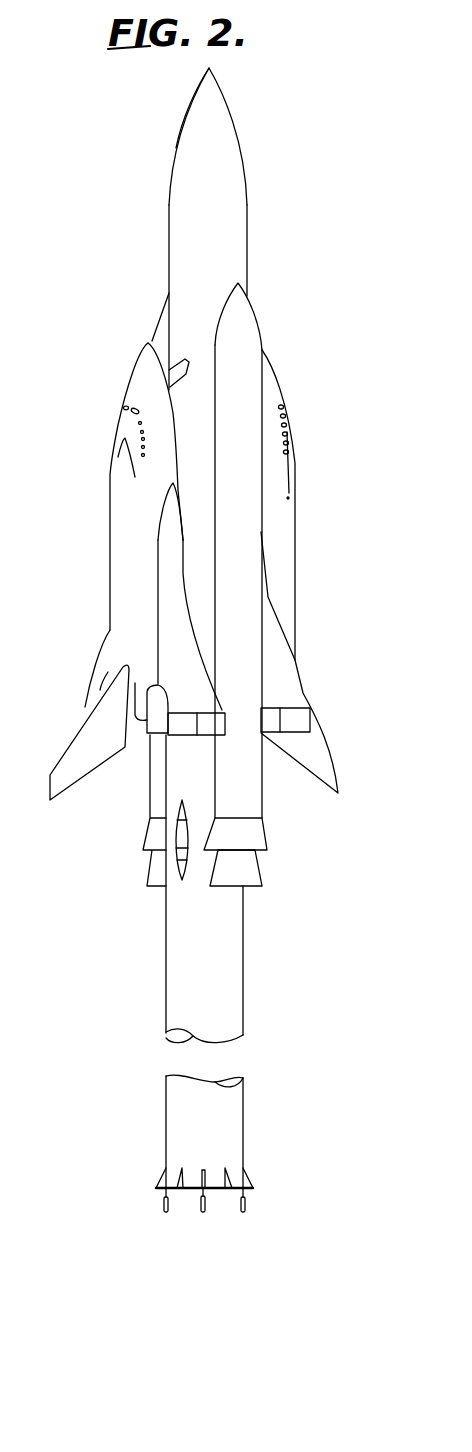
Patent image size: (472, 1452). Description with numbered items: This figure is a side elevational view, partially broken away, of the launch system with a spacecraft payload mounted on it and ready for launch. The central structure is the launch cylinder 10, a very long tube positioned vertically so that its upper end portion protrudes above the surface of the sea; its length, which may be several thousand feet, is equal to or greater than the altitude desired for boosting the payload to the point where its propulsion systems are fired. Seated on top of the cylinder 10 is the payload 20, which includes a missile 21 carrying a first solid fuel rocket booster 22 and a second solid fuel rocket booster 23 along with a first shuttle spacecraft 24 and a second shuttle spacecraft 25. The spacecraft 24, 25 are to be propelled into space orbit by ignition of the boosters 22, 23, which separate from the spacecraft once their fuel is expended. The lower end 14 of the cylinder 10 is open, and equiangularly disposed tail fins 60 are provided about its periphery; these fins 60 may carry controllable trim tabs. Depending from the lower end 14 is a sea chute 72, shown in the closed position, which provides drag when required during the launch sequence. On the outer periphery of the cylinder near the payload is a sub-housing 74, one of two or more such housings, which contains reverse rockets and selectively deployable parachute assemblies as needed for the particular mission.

The launch cylinder 10 is at (156, 1035).
The second end 14 is at (218, 1188).
The payload 20 is at (176, 148).
The missile 21 is at (216, 246).
The first solid fuel rocket booster 22 is at (151, 797).
The second solid fuel rocket booster 23 is at (256, 800).
The first shuttle spacecraft 24 is at (110, 507).
The second shuttle spacecraft 25 is at (297, 488).
The tail fins 60 is at (157, 1185).
The sea chute 72 is at (163, 1205).
The sub-housing 74 is at (178, 838).